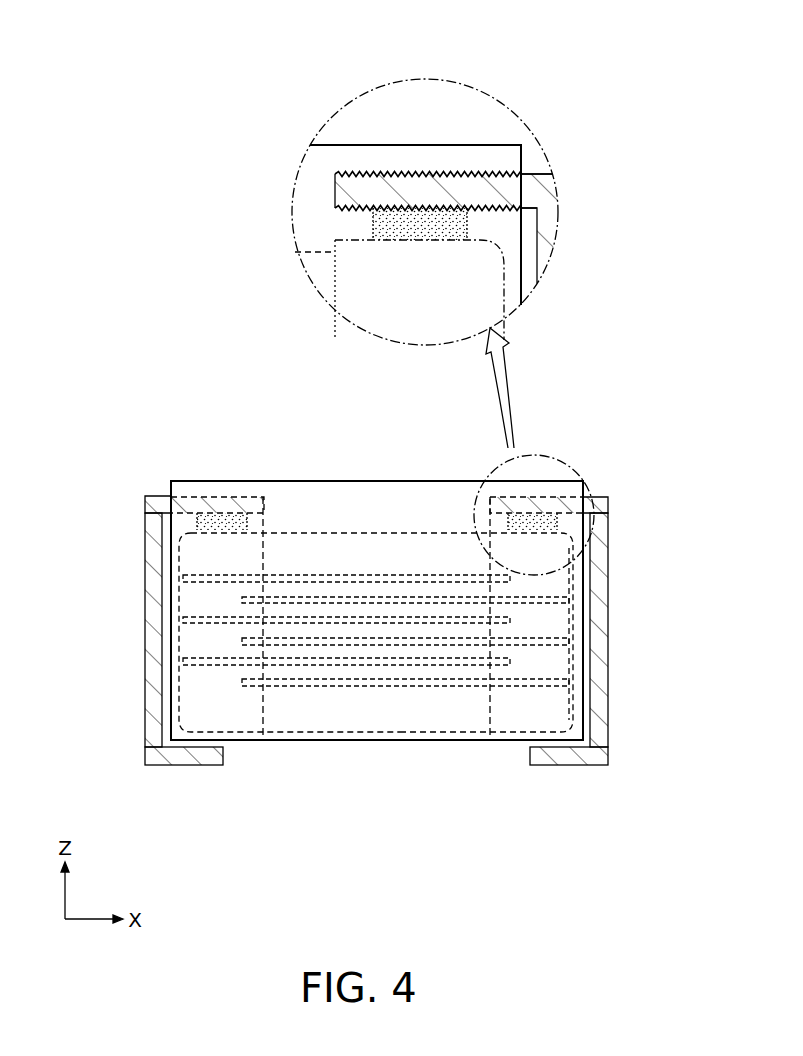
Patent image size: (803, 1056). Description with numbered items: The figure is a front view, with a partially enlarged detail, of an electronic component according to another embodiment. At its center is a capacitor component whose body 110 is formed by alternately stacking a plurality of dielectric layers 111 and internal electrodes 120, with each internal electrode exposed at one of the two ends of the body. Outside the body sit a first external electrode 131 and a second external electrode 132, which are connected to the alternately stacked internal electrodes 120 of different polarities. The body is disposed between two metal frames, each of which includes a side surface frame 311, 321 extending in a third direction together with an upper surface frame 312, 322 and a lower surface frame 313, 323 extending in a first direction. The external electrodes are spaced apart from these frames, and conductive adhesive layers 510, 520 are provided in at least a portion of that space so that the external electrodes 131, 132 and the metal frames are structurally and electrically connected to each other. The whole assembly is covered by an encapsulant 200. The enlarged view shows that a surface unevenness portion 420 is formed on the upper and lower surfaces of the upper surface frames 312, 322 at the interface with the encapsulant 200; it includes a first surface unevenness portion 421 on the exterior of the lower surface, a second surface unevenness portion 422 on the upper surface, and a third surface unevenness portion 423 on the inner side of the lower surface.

The body 110 is at (332, 532).
The dielectric layer 111 is at (405, 598).
The internal electrode 120 is at (553, 597).
The first external electrode 131 is at (217, 688).
The second external electrode 132 is at (548, 662).
The encapsulant 200 is at (410, 742).
The side surface frame 311 is at (155, 588).
The upper surface frame 312 is at (220, 498).
The lower surface frame 313 is at (195, 757).
The side surface frame 321 is at (603, 628).
The upper surface frame 322 is at (555, 175).
The lower surface frame 323 is at (572, 757).
The surface unevenness portion 420 is at (442, 105).
The 1-1 surface unevenness portion 421 is at (500, 176).
The 2-1 surface unevenness portion 422 is at (427, 190).
The 3-1 surface unevenness portion 423 is at (502, 44).
The conductive adhesive layer 510 is at (170, 513).
The conductive adhesive layer 520 is at (372, 220).